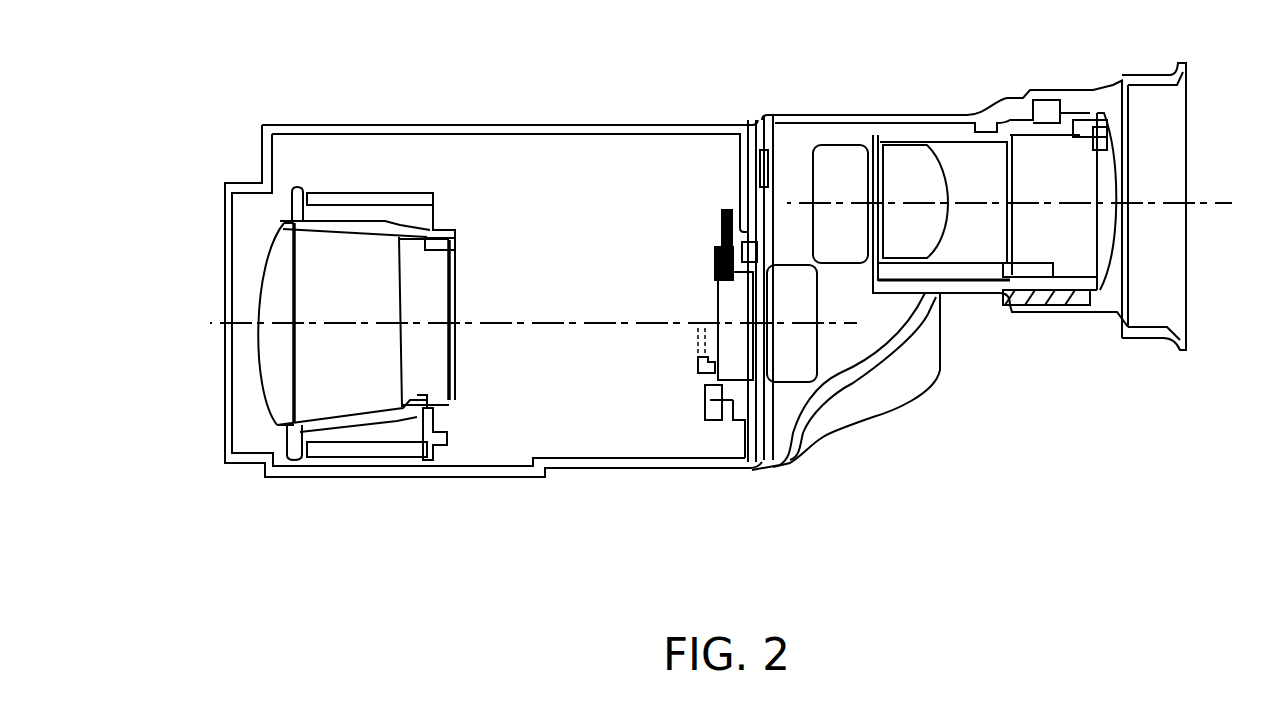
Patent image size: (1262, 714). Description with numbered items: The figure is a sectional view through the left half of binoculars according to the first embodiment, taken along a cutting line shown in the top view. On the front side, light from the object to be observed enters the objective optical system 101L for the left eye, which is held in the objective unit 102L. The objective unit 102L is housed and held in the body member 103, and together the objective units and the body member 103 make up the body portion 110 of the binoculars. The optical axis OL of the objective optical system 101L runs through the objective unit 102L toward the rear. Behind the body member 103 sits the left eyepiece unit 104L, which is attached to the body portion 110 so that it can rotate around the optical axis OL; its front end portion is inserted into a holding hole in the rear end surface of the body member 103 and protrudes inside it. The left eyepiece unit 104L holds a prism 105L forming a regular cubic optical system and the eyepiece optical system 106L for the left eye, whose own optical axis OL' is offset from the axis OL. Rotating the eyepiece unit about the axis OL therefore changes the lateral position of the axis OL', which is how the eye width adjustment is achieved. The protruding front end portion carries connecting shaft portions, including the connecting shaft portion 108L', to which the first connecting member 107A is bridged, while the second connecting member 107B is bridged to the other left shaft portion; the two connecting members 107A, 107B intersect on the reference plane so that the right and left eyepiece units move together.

The body portion 110 is at (480, 95).
The objective optical system 101L is at (278, 290).
The objective unit 102L is at (388, 224).
The body member 103 is at (545, 127).
The second connecting member 107B is at (716, 247).
The first connecting member 107A is at (700, 343).
The connecting shaft portion 108L' is at (654, 426).
The prism 105L is at (840, 180).
The left eyepiece unit 104L is at (907, 117).
The eyepiece optical system 106L is at (1078, 152).
The optical axis OL is at (508, 355).
The optical axis OL' is at (1016, 281).